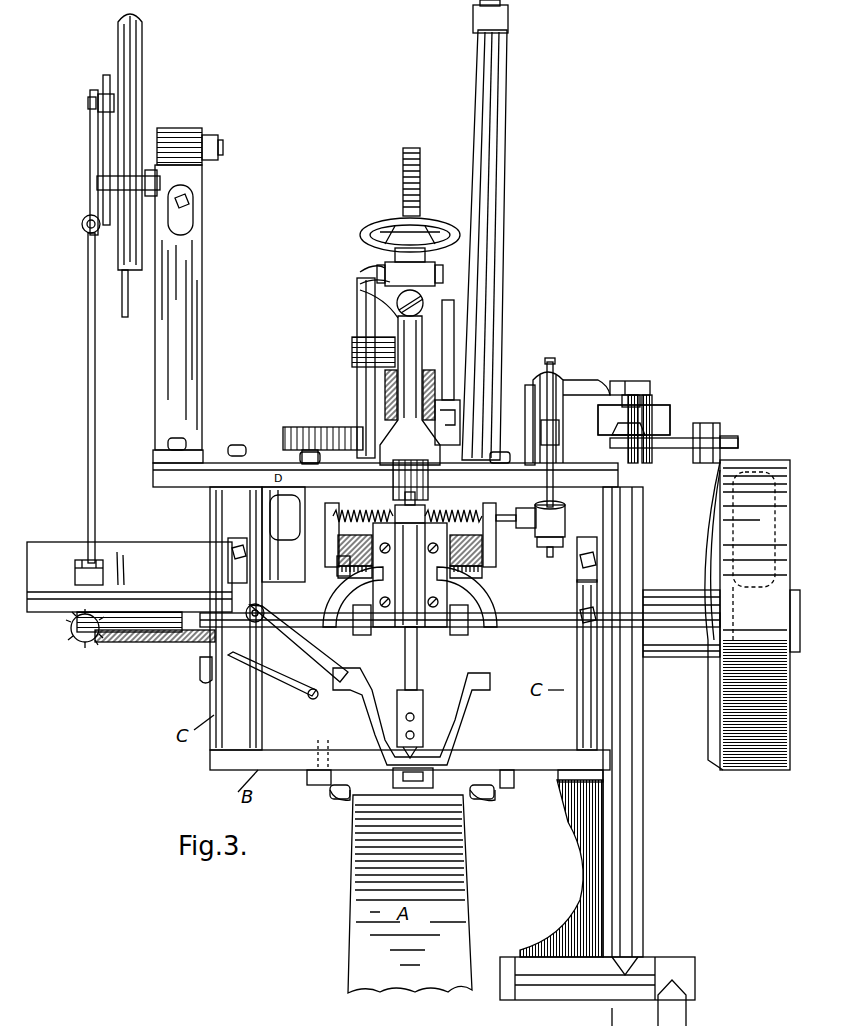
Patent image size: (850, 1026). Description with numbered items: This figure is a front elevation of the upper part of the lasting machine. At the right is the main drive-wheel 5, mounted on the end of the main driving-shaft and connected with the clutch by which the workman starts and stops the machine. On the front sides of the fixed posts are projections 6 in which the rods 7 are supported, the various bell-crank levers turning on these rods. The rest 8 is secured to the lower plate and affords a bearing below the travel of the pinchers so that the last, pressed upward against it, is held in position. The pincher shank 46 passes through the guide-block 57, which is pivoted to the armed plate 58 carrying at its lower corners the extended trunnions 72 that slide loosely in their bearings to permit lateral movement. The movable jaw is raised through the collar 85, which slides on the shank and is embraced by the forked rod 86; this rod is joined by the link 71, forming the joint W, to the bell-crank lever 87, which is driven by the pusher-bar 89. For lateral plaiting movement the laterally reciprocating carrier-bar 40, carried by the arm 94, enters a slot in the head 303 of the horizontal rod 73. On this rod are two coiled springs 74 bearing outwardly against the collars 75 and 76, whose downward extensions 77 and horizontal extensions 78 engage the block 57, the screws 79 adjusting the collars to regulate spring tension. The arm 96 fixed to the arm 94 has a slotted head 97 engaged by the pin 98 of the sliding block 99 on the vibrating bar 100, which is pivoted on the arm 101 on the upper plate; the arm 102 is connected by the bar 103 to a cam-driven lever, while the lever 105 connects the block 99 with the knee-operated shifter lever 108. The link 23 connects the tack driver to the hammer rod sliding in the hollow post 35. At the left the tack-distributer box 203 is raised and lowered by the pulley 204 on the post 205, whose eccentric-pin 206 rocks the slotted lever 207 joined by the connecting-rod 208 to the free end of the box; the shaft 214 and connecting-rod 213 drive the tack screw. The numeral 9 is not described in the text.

The pulley 204 is at (118, 54).
The post 205 is at (206, 195).
The eccentric-pin 206 is at (88, 104).
The lever 207 is at (88, 163).
The connecting-rod 208 is at (86, 423).
The box 203 is at (129, 577).
The shaft 214 is at (170, 632).
The connecting-rod 213 is at (300, 695).
The bell-crank lever 108 is at (297, 643).
The projections 6 is at (228, 546).
The rods 7 is at (547, 629).
The rest 8 is at (373, 748).
The guide block 9 is at (405, 782).
The carrier-bar 40 is at (555, 478).
The shank 46 is at (405, 661).
The guide-block 57 is at (410, 559).
The armed plate 58 is at (410, 597).
The trunnions 72 is at (355, 635).
The horizontal rod 73 is at (505, 521).
The coiled springs 74 is at (372, 510).
The collar 75 is at (503, 512).
The collar 76 is at (325, 514).
The downward extensions 77 is at (337, 562).
The horizontal extensions 78 is at (340, 545).
The screws 79 is at (344, 565).
The collar 85 is at (410, 480).
The forked rod 86 is at (410, 390).
The bell-crank lever 87 is at (360, 276).
The pusher-bar 89 is at (333, 430).
The link 71 is at (375, 292).
The link 23 is at (447, 378).
The hollow post 35 is at (497, 231).
The joint W is at (419, 296).
The arm 94 is at (551, 362).
The arm 96 is at (598, 388).
The slotted head 97 is at (650, 382).
The pin 98 is at (622, 399).
The sliding block 99 is at (634, 420).
The vibrating bar 100 is at (663, 406).
The arm 101 is at (648, 447).
The arm 102 is at (738, 440).
The bar 103 is at (720, 430).
The lever 105 is at (640, 838).
The head 303 is at (565, 512).
The main drive-wheel 5 is at (755, 772).